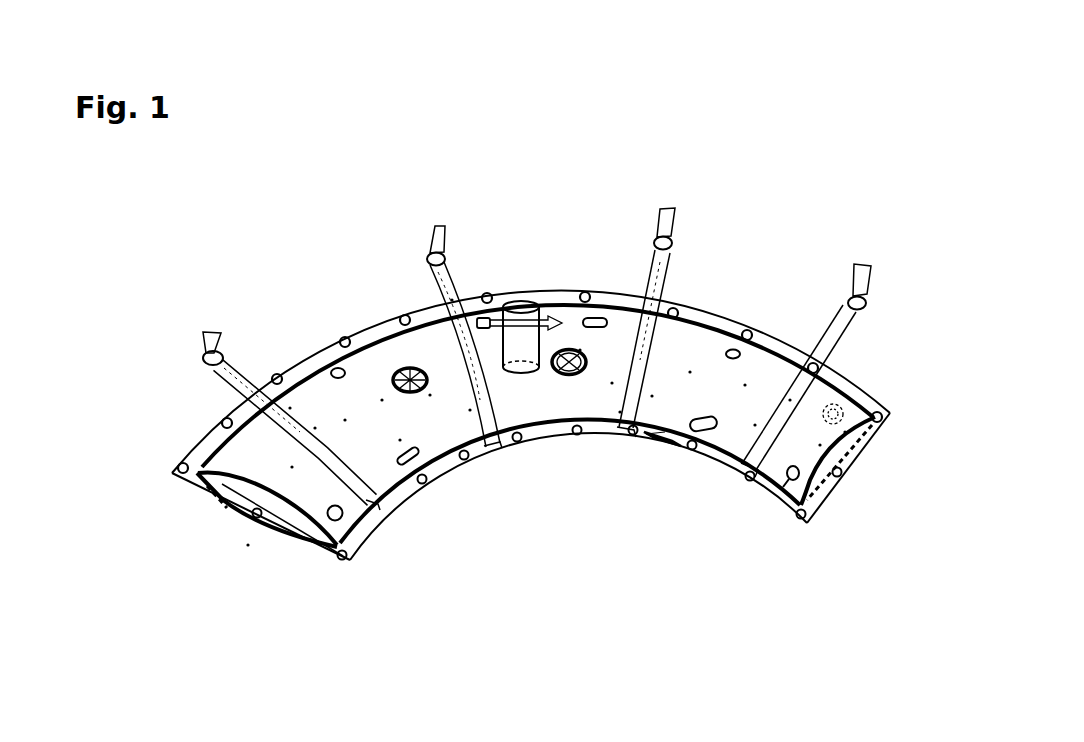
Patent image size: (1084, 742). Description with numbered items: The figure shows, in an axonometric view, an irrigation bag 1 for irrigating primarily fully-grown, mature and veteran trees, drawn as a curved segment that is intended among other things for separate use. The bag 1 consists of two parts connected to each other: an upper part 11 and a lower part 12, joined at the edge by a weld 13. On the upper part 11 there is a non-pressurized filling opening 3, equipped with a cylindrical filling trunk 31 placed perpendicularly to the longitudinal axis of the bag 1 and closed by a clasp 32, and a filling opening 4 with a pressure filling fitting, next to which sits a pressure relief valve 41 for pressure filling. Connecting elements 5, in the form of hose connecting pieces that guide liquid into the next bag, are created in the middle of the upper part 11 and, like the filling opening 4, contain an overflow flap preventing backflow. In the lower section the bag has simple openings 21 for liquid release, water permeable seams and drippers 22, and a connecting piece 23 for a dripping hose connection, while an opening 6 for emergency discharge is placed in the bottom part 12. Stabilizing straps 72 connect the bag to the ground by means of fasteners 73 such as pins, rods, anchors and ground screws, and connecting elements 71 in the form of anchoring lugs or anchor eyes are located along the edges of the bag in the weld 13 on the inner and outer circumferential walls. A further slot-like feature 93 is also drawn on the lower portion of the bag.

The bag 1 is at (888, 482).
The non-pressurized filling opening 3 is at (528, 380).
The filling opening with pressure filling fitting 4 is at (580, 374).
The connecting element 5 is at (356, 521).
The opening for emergency discharge 6 is at (848, 411).
The upper part 11 is at (242, 466).
The lower part 12 is at (225, 528).
The weld 13 is at (710, 318).
The openings for liquid release 21 is at (292, 480).
The drippers 22 is at (606, 312).
The connecting piece 23 is at (326, 358).
The filling trunk 31 is at (524, 318).
The clasp 32 is at (480, 308).
The pressure relief valve 41 is at (398, 362).
The connecting elements 71 is at (338, 574).
The stabilizing straps 72 is at (218, 379).
The fasteners 73 is at (213, 330).
The slanted slot 93 is at (673, 458).